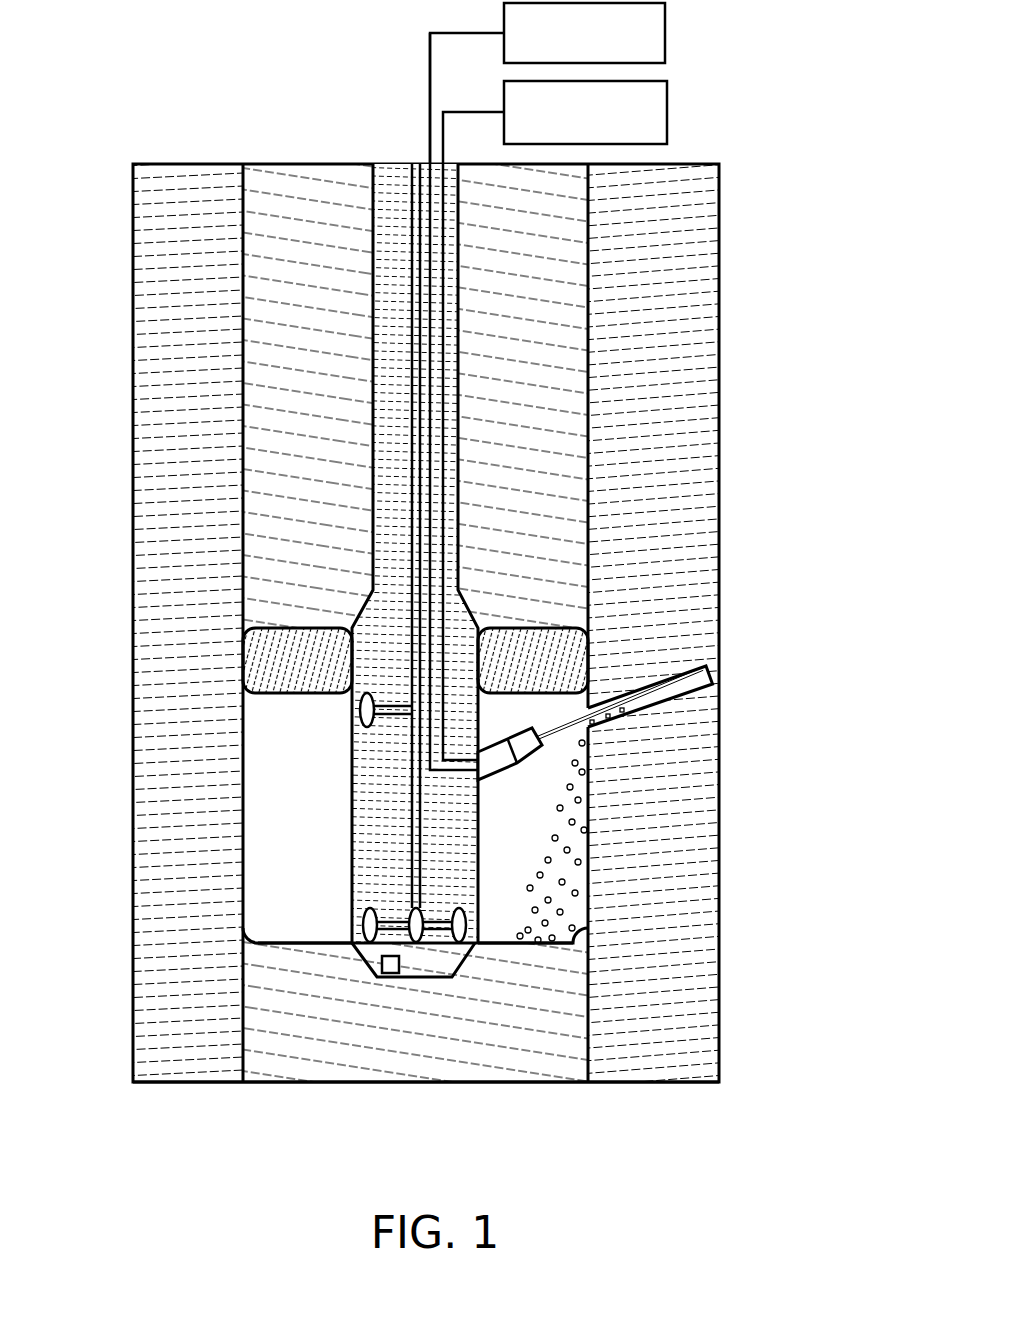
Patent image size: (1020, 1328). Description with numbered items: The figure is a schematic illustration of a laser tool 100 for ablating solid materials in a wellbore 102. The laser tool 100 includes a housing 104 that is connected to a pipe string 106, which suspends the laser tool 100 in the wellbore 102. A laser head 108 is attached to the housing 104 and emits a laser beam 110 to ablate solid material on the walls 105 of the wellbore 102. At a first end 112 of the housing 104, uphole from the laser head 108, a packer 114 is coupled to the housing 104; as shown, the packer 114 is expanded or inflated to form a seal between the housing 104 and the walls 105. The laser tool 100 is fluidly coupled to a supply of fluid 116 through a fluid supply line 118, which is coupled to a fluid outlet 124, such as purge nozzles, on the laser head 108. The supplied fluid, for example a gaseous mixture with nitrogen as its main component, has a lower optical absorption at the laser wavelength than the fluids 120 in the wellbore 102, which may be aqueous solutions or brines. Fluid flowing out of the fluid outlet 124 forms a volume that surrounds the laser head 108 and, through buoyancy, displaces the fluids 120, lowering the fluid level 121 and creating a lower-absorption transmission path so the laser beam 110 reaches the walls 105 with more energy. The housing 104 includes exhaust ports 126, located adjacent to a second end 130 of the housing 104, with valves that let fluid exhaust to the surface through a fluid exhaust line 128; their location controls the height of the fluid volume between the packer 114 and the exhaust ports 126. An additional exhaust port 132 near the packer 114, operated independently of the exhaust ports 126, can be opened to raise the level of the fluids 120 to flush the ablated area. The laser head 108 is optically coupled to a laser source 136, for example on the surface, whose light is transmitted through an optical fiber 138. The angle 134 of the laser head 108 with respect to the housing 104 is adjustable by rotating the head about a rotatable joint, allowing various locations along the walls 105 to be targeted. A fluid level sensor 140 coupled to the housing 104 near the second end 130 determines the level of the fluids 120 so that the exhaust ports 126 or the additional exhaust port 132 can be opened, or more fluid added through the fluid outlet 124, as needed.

The laser tool 100 is at (345, 619).
The wellbore 102 is at (132, 270).
The housing 104 is at (243, 892).
The walls 105 is at (592, 802).
The pipe string 106 is at (372, 339).
The laser head 108 is at (495, 770).
The laser beam 110 is at (715, 690).
The first end 112 is at (282, 825).
The packer 114 is at (604, 659).
The supply of fluid 116 is at (667, 117).
The fluid supply line 118 is at (456, 450).
The fluids 120 is at (425, 1058).
The fluid level 121 is at (310, 945).
The fluid outlet 124 is at (542, 744).
The exhaust ports 126 is at (478, 916).
The fluid exhaust line 128 is at (435, 382).
The second end 130 is at (440, 970).
The additional exhaust port 132 is at (345, 712).
The angle 134 is at (519, 719).
The laser source 136 is at (665, 37).
The optical fiber 138 is at (430, 80).
The fluid level sensor 140 is at (378, 977).